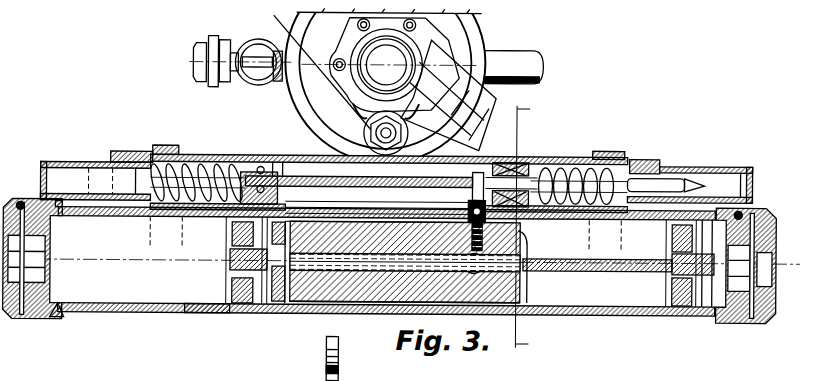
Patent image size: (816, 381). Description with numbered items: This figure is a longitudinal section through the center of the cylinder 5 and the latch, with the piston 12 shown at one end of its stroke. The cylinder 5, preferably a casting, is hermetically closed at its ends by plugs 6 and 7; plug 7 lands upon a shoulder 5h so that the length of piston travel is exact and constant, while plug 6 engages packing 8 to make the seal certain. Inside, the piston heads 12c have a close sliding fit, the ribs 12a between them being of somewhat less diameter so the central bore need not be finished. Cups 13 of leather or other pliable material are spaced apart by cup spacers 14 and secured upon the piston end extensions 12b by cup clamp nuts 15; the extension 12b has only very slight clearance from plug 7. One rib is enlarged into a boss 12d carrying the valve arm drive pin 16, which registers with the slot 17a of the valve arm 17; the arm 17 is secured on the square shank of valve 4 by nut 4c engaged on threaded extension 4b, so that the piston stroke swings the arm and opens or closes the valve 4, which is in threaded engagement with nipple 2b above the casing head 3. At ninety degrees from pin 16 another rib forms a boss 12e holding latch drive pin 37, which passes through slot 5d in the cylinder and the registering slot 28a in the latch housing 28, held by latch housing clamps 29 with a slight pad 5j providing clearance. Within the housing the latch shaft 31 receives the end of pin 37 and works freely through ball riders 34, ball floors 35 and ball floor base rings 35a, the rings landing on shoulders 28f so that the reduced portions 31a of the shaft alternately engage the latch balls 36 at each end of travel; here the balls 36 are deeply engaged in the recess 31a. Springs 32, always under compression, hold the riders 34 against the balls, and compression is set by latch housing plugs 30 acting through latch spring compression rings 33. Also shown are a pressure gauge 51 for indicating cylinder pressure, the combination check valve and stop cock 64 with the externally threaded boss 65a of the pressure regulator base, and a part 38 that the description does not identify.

The nipple 2b is at (354, 30).
The casing head 3 is at (449, 37).
The valve 4 is at (489, 75).
The threaded extension 4b is at (279, 42).
The nut 4c is at (272, 16).
The cylinder 5 is at (93, 315).
The slot 5d is at (393, 215).
The shoulder 5h is at (55, 317).
The pad or raised portion 5j is at (170, 216).
The plug 6 is at (15, 322).
The plug 7 is at (43, 322).
The packing 8 is at (33, 203).
The piston 12 is at (529, 303).
The ribs 12a is at (576, 270).
The extensions 12b is at (246, 306).
The piston heads 12c is at (672, 313).
The boss 12d is at (712, 322).
The boss 12e is at (524, 243).
The cups 13 is at (264, 310).
The cup spacers 14 is at (711, 183).
The cup clamp nuts 15 is at (200, 314).
The valve arm drive pin 16 is at (480, 273).
The valve arm 17 is at (527, 56).
The slot 17a is at (433, 276).
The latch housing 28 is at (214, 157).
The slot 28a is at (342, 208).
The shoulders 28f is at (283, 157).
The latch housing clamps 29 is at (163, 147).
The latch housing plugs 30 is at (97, 162).
The latch shaft 31 is at (322, 152).
The turned down portions 31a is at (686, 180).
The springs 32 is at (173, 147).
The latch spring compression rings 33 is at (142, 153).
The ball riders 34 is at (248, 162).
The ball floors 35 is at (490, 165).
The ball floor base rings 35a is at (276, 160).
The latch balls 36 is at (228, 213).
The latch drive pin 37 is at (484, 172).
The shaft line 38 is at (541, 60).
The pressure gauges 51 is at (340, 359).
The combustion check valve and stop cock 64 is at (253, 50).
The externally threaded boss 65a is at (195, 68).